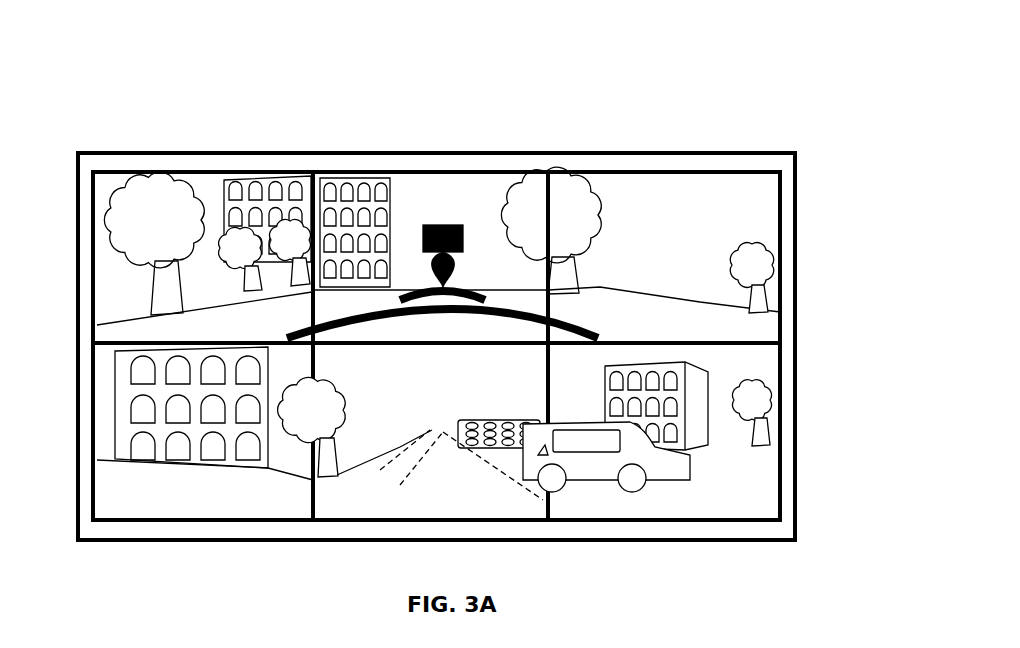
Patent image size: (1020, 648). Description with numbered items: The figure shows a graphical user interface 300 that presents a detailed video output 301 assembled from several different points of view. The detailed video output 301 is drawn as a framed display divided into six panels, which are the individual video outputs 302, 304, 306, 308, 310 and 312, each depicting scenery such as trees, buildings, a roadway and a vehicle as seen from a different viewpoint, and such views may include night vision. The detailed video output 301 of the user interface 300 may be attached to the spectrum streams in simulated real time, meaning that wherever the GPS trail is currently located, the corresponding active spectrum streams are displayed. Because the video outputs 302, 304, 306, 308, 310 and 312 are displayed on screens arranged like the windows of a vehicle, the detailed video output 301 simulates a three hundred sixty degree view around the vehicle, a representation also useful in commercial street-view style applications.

The graphical user interface 300 is at (731, 73).
The detailed video output 301 is at (754, 164).
The video output 302 is at (646, 185).
The video output 304 is at (447, 185).
The video output 306 is at (204, 185).
The video output 308 is at (172, 492).
The video output 310 is at (420, 504).
The video output 312 is at (757, 483).